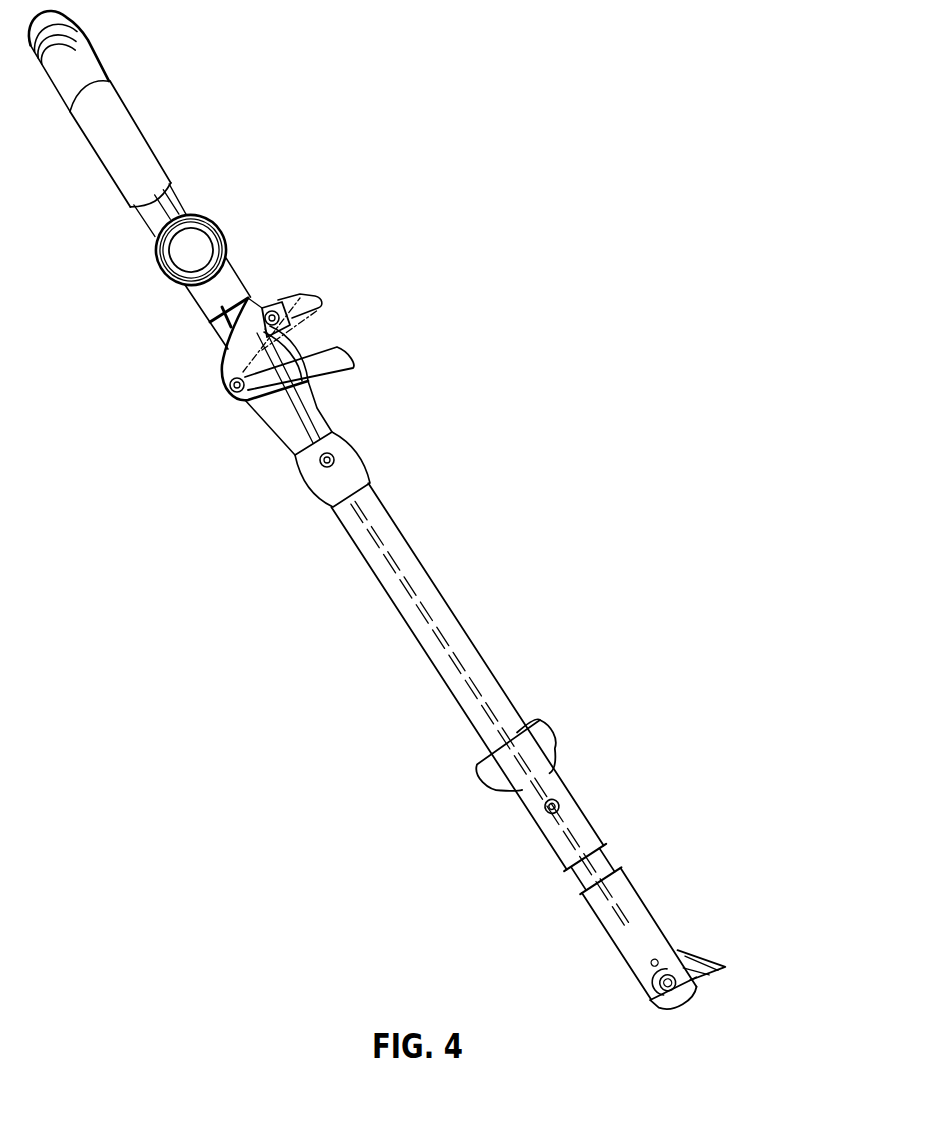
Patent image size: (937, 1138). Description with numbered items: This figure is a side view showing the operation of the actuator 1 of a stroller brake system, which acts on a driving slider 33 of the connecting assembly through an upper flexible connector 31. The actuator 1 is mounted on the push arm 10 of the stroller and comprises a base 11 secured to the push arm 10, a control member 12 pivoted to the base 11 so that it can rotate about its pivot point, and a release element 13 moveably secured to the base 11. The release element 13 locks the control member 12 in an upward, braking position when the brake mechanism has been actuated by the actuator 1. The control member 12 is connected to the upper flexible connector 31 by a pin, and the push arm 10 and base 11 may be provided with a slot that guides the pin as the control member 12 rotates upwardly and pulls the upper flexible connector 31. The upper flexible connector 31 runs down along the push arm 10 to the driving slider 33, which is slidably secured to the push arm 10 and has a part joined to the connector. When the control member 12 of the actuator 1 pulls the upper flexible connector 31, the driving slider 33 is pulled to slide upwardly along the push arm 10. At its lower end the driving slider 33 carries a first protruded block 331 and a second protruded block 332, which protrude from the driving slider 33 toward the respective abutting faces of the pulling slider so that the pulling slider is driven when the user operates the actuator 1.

The actuator 1 is at (148, 337).
The push arm 10 is at (365, 551).
The base 11 is at (227, 372).
The control member 12 is at (337, 360).
The release element 13 is at (297, 300).
The upper flexible connector 31 is at (423, 617).
The driving slider 33 is at (647, 907).
The first protruded block 331 is at (727, 967).
The second protruded block 332 is at (640, 960).